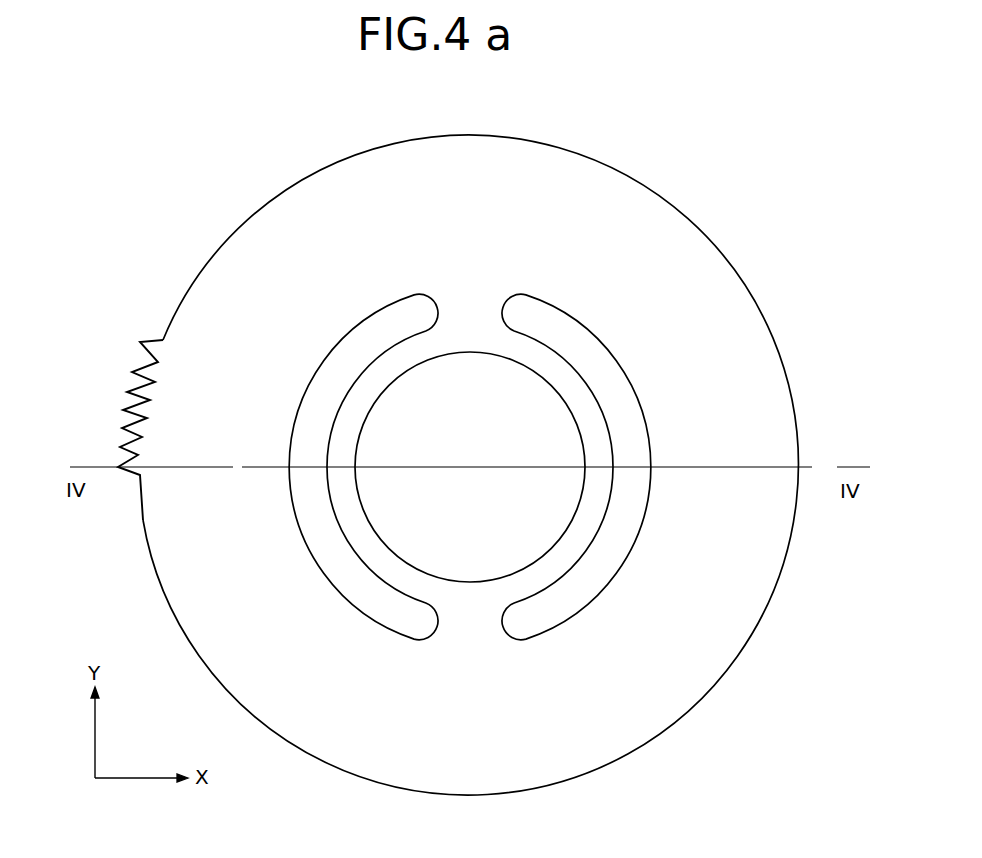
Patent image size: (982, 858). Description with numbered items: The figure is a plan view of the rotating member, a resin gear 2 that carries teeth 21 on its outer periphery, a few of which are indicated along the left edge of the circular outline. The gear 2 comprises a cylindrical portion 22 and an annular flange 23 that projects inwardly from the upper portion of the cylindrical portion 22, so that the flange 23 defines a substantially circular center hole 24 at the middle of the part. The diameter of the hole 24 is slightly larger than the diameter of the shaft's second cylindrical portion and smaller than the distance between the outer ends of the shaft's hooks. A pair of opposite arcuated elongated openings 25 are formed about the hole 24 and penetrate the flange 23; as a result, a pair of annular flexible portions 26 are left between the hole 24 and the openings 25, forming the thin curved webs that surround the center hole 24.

The gear 2 is at (195, 190).
The teeth 21 is at (132, 400).
The cylindrical portion 22 is at (680, 665).
The annular flange 23 is at (482, 262).
The center hole 24 is at (492, 411).
The arcuated elongated openings 25 is at (612, 397).
The annular flexible portions 26 is at (577, 542).